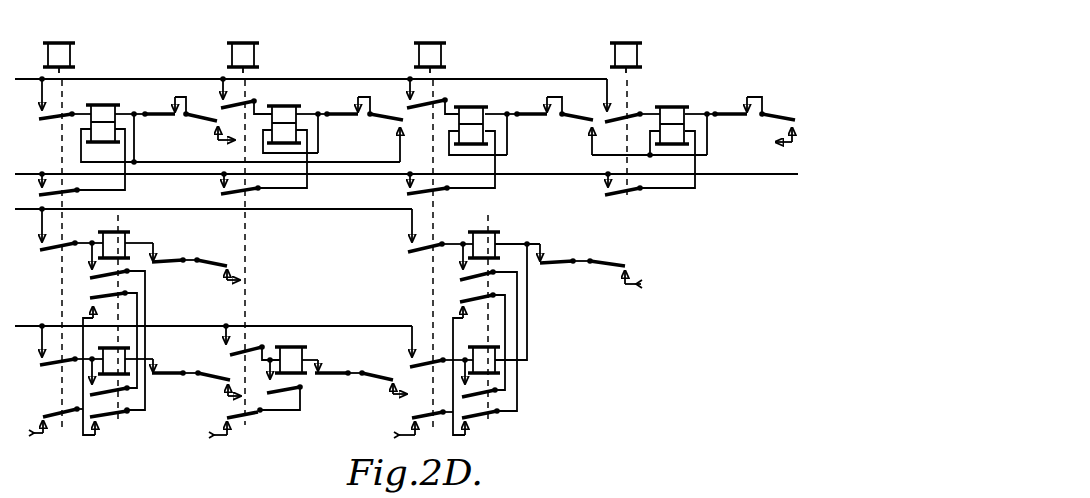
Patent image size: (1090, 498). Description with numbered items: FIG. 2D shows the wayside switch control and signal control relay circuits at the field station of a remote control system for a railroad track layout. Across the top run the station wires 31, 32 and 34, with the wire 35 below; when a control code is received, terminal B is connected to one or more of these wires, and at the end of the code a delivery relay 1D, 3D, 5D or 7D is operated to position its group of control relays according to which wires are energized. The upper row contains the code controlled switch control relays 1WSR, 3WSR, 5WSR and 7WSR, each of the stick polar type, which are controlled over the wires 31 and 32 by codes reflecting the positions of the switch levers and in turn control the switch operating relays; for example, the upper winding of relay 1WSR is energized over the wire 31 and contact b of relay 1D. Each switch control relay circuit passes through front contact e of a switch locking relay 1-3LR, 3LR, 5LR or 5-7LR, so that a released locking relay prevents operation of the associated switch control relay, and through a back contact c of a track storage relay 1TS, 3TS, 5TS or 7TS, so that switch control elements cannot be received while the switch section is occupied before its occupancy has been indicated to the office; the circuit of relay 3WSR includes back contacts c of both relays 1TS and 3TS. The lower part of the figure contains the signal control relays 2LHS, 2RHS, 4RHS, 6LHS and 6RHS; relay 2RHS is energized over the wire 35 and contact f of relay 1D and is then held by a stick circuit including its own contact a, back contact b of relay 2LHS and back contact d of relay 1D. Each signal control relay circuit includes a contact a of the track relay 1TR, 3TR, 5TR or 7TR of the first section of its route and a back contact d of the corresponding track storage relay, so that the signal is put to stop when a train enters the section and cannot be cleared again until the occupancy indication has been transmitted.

The wire 31 is at (311, 68).
The wire 32 is at (406, 163).
The wire 34 is at (213, 214).
The wire 35 is at (213, 330).
The delivery relay 1D is at (59, 46).
The delivery relay 3D is at (243, 46).
The delivery relay 5D is at (430, 46).
The delivery relay 7D is at (626, 46).
The switch control relay 1WSR is at (219, 135).
The switch control relay 3WSR is at (273, 135).
The switch control relay 5WSR is at (462, 135).
The switch control relay 7WSR is at (660, 137).
The switch locking relay 1-3LR is at (157, 98).
The switch locking relay 3LR is at (346, 100).
The switch locking relay 5LR is at (536, 100).
The switch locking relay 5-7LR is at (727, 99).
The track storage relay 1TS is at (215, 238).
The track storage relay 3TS is at (390, 239).
The track storage relay 5TS is at (613, 186).
The track storage relay 7TS is at (496, 190).
The signal control relay 2LHS is at (84, 325).
The signal control relay 2RHS is at (96, 370).
The signal control relay 4RHS is at (257, 384).
The signal control relay 6LHS is at (459, 327).
The signal control relay 6RHS is at (456, 371).
The track relay 1TR is at (176, 357).
The track relay 3TR is at (340, 355).
The track relay 5TR is at (566, 245).
The track relay 7TR is at (176, 244).